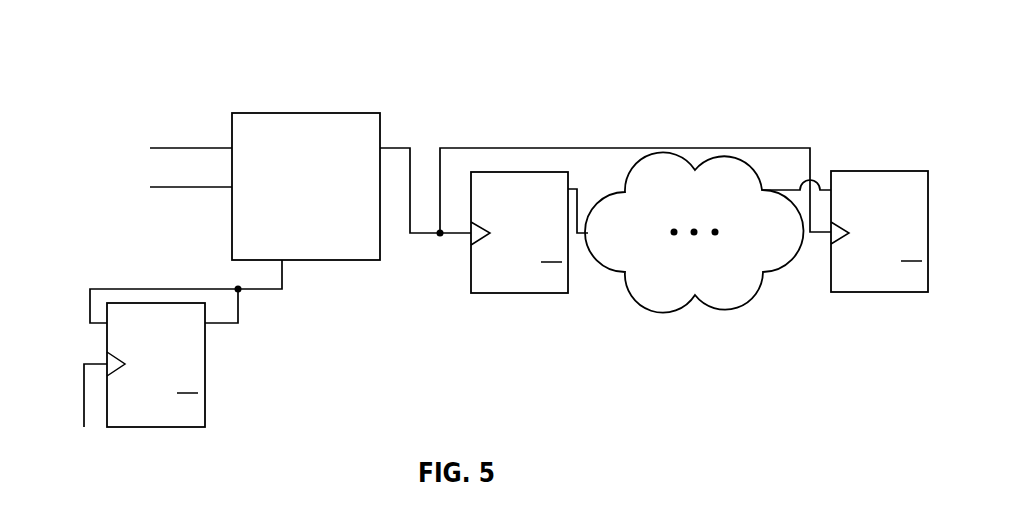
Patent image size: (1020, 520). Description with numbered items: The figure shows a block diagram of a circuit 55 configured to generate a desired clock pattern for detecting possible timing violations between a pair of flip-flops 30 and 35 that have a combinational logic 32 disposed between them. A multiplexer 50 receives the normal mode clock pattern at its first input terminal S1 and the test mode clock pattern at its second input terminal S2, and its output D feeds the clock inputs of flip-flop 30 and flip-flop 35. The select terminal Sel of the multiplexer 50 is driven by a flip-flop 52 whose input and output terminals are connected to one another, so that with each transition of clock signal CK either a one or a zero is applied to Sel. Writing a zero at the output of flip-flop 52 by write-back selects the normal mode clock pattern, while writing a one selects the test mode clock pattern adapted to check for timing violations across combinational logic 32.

The circuit 55 is at (465, 44).
The multiplexer 50 is at (360, 260).
The flip-flop 52 is at (205, 365).
The flip-flop 30 is at (520, 172).
The combinational logic 32 is at (695, 295).
The flip-flop 35 is at (878, 171).